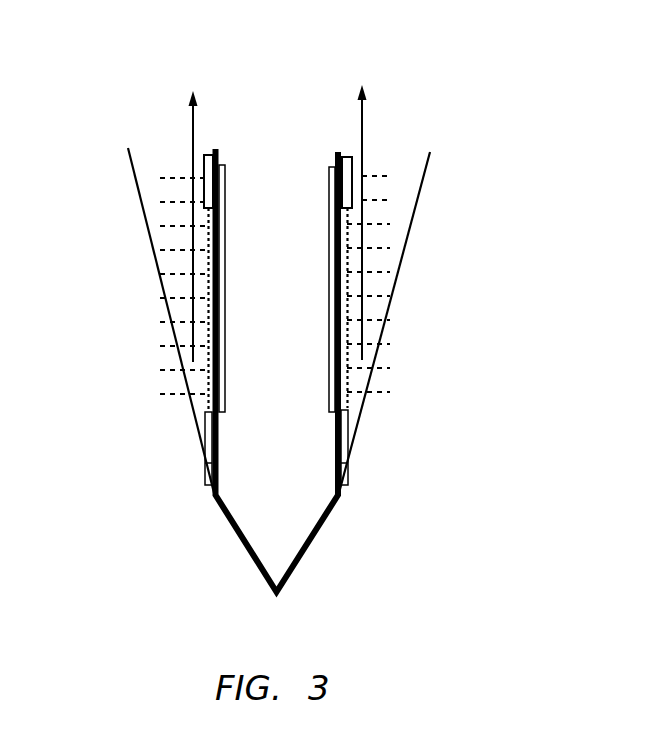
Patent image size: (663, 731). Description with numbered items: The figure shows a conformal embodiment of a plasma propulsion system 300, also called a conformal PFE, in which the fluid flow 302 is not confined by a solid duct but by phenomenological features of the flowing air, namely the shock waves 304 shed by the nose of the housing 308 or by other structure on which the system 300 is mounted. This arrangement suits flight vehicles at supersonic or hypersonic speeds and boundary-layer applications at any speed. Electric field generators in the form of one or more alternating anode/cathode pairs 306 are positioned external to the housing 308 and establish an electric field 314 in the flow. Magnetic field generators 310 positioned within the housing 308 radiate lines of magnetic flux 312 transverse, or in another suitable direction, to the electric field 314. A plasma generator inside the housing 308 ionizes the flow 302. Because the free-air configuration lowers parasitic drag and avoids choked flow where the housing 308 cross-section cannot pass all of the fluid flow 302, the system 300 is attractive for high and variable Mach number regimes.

The plasma propulsion system 300 is at (456, 51).
The fluid flow 302 is at (190, 115).
The shock waves 304 is at (153, 265).
The alternating anode/cathode pairs 306 is at (355, 183).
The housing 308 is at (242, 543).
The magnetic field generators 310 is at (227, 198).
The lines of magnetic flux 312 is at (165, 348).
The electric field 314 is at (208, 387).